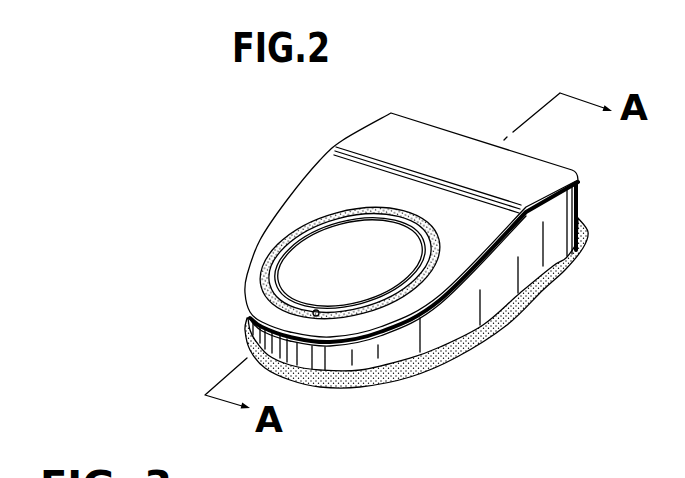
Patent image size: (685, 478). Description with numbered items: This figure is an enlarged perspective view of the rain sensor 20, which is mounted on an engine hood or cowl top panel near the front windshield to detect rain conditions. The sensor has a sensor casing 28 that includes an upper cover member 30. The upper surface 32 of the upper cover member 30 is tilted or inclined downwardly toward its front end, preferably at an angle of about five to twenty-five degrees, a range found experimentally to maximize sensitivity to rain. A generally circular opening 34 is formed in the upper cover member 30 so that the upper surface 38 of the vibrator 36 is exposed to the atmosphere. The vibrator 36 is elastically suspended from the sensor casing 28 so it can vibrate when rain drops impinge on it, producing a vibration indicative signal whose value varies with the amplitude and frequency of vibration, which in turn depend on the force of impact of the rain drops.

The rain sensor 20 is at (395, 103).
The sensor casing 28 is at (488, 136).
The upper cover member 30 is at (292, 190).
The upper surface 32 is at (470, 273).
The circular opening 34 is at (317, 315).
The vibrator 36 is at (296, 264).
The upper surface of vibrator 38 is at (305, 250).